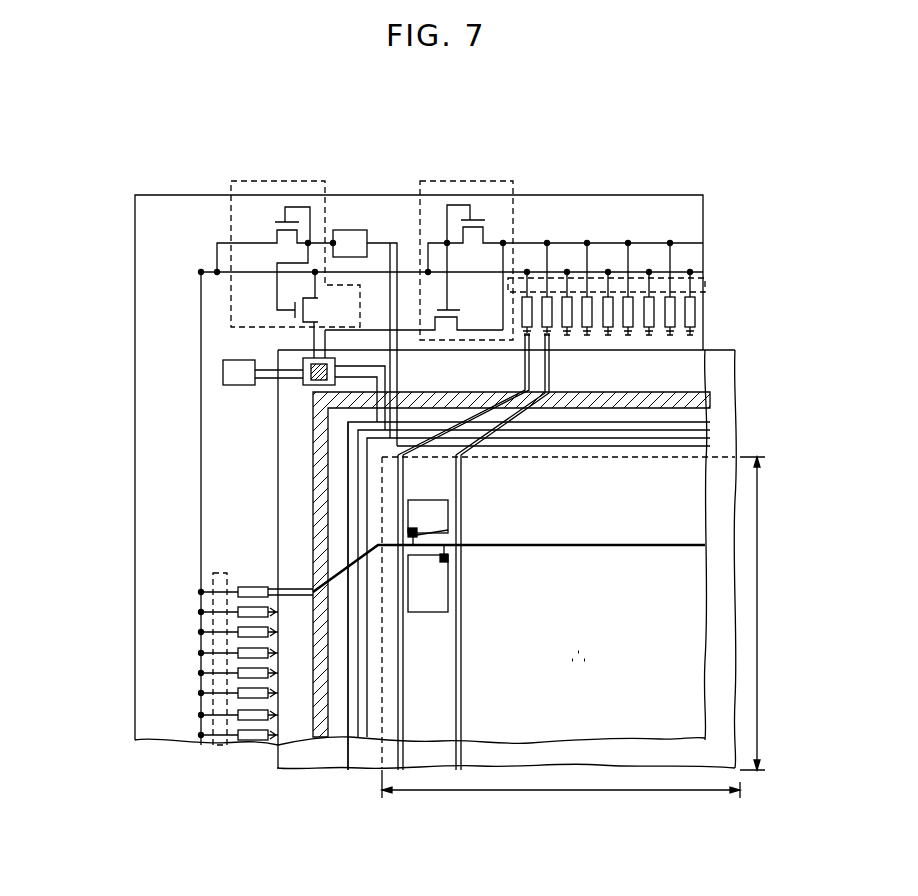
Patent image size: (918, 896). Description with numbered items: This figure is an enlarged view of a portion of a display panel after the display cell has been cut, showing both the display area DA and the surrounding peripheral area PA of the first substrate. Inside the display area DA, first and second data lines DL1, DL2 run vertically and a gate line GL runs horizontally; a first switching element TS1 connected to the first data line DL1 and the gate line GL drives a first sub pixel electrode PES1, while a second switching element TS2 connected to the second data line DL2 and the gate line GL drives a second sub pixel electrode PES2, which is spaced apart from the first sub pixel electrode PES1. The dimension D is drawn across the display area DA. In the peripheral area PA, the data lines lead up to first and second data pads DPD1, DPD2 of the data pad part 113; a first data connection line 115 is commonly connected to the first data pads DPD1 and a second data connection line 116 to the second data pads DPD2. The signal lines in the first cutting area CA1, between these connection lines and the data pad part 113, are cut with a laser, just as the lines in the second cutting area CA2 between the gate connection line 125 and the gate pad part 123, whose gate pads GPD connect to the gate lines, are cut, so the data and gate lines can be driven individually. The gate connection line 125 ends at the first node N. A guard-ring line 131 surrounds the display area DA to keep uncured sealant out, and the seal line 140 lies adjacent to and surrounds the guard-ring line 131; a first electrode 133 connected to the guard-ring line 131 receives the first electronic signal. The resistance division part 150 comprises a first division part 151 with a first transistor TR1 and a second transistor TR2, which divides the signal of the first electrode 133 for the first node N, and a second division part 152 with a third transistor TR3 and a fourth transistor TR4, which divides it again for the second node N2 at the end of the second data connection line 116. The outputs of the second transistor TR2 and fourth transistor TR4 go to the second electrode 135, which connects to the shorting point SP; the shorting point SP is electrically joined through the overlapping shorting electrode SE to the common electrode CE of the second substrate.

The resistance division part 150 is at (473, 128).
The first division part 151 is at (295, 181).
The second division part 152 is at (455, 181).
The first electrode 133 is at (350, 230).
The peripheral area PA is at (570, 232).
The first data connection line 115 is at (612, 272).
The second data connection line 116 is at (657, 243).
The first cutting area CA1 is at (697, 286).
The data pad part 113 is at (738, 270).
The first node N is at (201, 272).
The second node N2 is at (503, 243).
The first transistor TR1 is at (275, 258).
The second transistor TR2 is at (324, 315).
The third transistor TR3 is at (565, 257).
The fourth transistor TR4 is at (414, 331).
The second electrode 135 is at (223, 370).
The shorting point SP is at (306, 360).
The shorting electrode SE is at (302, 382).
The seal line 140 is at (708, 398).
The guard-ring line 131 is at (700, 440).
The gate connection line 125 is at (201, 497).
The second cutting area CA2 is at (213, 576).
The gate pad GPD is at (250, 586).
The gate pad part 123 is at (278, 768).
The common electrode CE is at (348, 758).
The first data pad DPD1 is at (523, 336).
The second data pad DPD2 is at (548, 336).
The first data line DL1 is at (403, 772).
The second data line DL2 is at (460, 772).
The gate line GL is at (562, 548).
The first sub pixel electrode PES1 is at (450, 505).
The second sub pixel electrode PES2 is at (450, 598).
The first switching element TS1 is at (452, 531).
The second switching element TS2 is at (450, 558).
The distance D is at (561, 791).
The display area DA is at (588, 613).